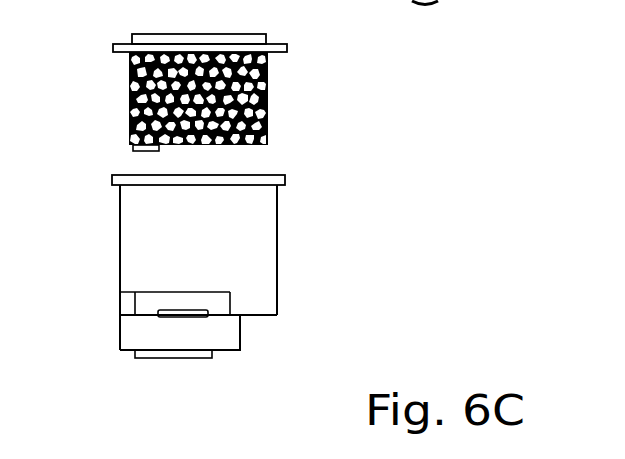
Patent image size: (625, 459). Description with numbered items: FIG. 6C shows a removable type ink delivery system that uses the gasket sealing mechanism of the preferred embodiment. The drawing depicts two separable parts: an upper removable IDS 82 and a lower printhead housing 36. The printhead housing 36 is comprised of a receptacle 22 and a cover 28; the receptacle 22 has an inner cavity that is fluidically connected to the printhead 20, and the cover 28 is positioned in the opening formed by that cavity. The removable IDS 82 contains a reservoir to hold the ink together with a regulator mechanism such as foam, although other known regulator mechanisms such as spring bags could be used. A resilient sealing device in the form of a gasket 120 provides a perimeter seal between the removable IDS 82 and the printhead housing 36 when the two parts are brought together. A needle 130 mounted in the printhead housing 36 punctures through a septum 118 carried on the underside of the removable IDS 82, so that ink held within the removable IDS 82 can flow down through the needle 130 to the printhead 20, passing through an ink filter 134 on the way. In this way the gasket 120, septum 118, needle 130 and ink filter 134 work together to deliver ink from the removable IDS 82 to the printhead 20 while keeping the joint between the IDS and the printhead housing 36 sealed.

The printhead 20 is at (190, 360).
The receptacle 22 is at (260, 221).
The cover 28 is at (131, 34).
The printhead housing 36 is at (218, 287).
The removable IDS 82 is at (208, 86).
The septum 118 is at (131, 148).
The gasket 120 is at (128, 58).
The needle 130 is at (143, 293).
The ink filter 134 is at (200, 317).